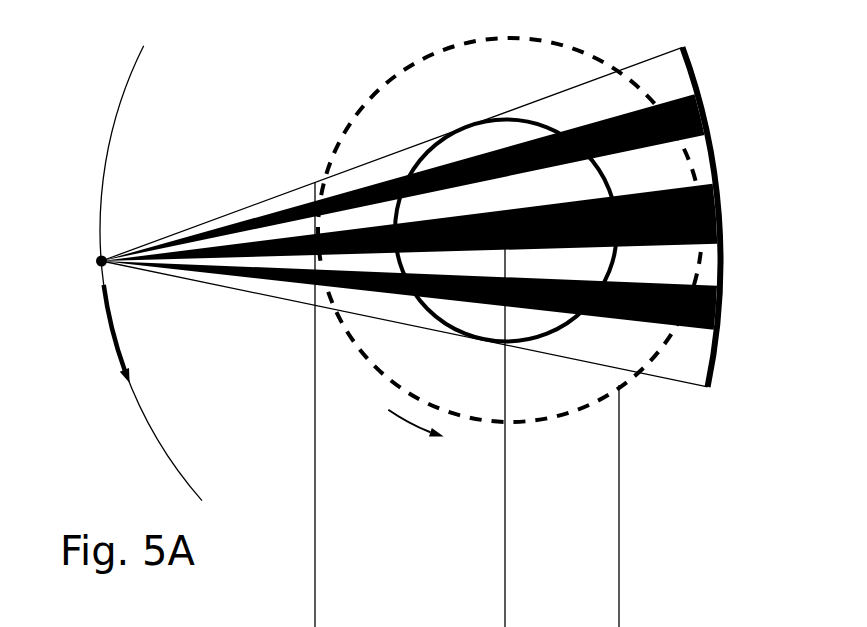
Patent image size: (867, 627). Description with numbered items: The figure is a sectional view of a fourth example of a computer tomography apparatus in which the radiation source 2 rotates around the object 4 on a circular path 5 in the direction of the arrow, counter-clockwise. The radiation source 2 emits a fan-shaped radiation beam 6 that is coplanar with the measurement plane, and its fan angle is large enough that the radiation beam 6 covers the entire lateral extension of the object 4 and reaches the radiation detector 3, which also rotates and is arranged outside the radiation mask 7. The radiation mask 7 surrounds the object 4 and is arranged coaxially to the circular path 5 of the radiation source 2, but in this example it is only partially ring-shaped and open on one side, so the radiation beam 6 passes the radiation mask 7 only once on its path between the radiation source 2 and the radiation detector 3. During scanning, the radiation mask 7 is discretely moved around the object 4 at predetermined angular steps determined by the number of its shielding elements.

The radiation source 2 is at (97, 256).
The radiation detector 3 is at (690, 53).
The object 4 is at (396, 152).
The circular path 5 is at (129, 73).
The radiation beam 6 is at (245, 220).
The radiation mask 7 is at (406, 68).